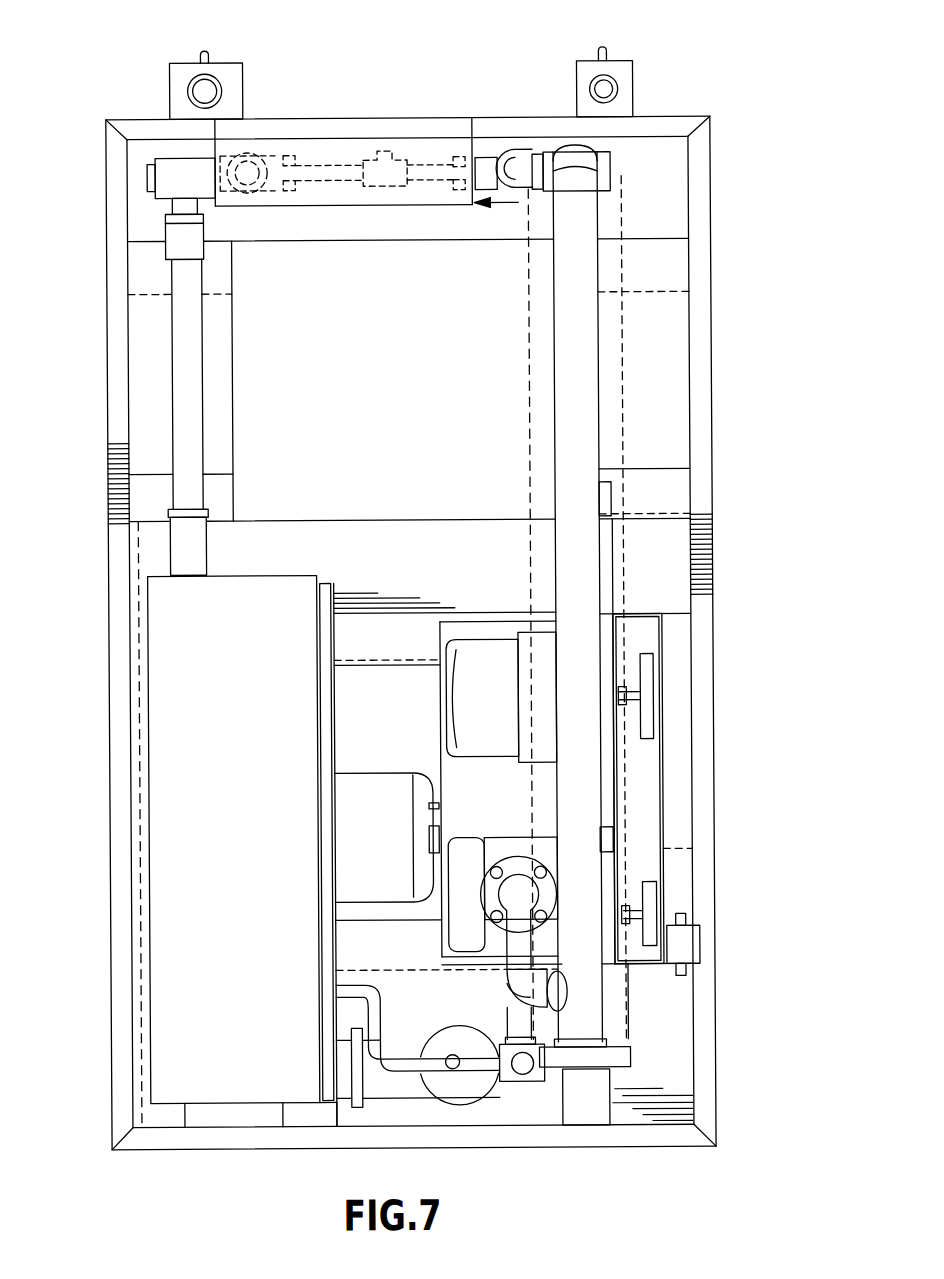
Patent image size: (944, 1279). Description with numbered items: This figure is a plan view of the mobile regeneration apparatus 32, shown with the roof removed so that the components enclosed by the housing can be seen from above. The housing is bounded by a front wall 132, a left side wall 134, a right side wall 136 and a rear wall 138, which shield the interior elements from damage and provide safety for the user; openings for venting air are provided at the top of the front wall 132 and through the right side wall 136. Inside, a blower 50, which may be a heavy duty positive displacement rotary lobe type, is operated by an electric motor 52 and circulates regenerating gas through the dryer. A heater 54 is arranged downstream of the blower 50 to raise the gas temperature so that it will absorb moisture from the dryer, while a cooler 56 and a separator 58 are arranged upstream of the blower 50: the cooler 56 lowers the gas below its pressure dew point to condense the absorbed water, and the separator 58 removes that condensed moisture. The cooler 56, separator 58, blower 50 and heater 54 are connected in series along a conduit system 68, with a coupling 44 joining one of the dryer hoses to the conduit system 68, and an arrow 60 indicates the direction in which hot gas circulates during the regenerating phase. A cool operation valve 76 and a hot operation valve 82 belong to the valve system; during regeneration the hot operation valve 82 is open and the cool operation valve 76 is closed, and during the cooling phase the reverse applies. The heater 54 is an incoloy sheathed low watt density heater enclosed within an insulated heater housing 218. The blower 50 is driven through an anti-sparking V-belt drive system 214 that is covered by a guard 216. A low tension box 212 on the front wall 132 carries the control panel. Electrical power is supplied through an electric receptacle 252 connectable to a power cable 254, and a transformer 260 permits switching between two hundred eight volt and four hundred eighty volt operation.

The mobile regeneration apparatus 32 is at (752, 212).
The coupling 44 is at (391, 138).
The blower 50 is at (460, 838).
The electric motor 52 is at (504, 695).
The heater 54 is at (598, 372).
The cooler 56 is at (240, 817).
The separator 58 is at (406, 1043).
The arrow 60 is at (502, 205).
The conduit system 68 is at (203, 424).
The cool operation valve 76 is at (437, 183).
The hot operation valve 82 is at (343, 195).
The front wall 132 is at (682, 117).
The left side wall 134 is at (716, 640).
The right side wall 136 is at (108, 420).
The rear wall 138 is at (174, 1150).
The low tension box 212 is at (282, 150).
The anti-sparking V-belt drive system 214 is at (656, 903).
The guard 216 is at (665, 762).
The insulated heater housing 218 is at (526, 450).
The electric receptacle 252 is at (240, 62).
The power cable 254 is at (636, 60).
The transformer 260 is at (683, 396).